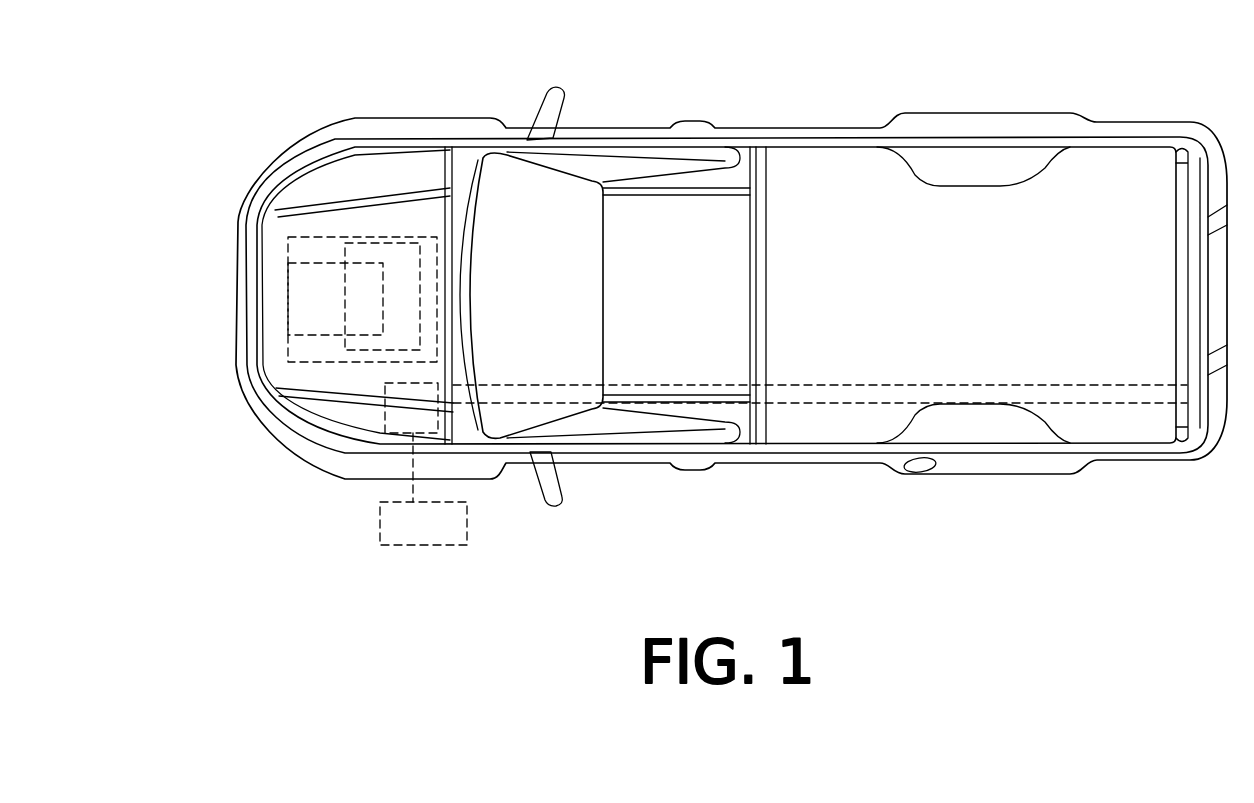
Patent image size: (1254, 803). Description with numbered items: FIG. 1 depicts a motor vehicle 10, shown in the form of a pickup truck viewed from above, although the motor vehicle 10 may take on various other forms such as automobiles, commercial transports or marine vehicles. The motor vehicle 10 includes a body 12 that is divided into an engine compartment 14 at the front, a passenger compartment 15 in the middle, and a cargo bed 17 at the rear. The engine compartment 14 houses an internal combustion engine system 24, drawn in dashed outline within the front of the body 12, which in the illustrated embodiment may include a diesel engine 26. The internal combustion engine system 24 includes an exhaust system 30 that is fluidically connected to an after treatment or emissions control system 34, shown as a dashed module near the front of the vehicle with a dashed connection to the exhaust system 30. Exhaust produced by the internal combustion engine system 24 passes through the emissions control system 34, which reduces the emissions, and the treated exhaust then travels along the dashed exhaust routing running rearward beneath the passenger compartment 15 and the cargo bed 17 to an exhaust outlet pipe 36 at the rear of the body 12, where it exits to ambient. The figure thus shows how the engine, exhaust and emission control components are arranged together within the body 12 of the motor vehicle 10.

The motor vehicle 10 is at (1000, 515).
The body 12 is at (802, 465).
The engine compartment 14 is at (388, 185).
The passenger compartment 15 is at (557, 207).
The cargo bed 17 is at (845, 190).
The internal combustion engine system 24 is at (322, 304).
The diesel engine 26 is at (314, 252).
The exhaust system 30 is at (327, 373).
The emissions control system 34 is at (378, 420).
The exhaust outlet pipe 36 is at (1104, 410).